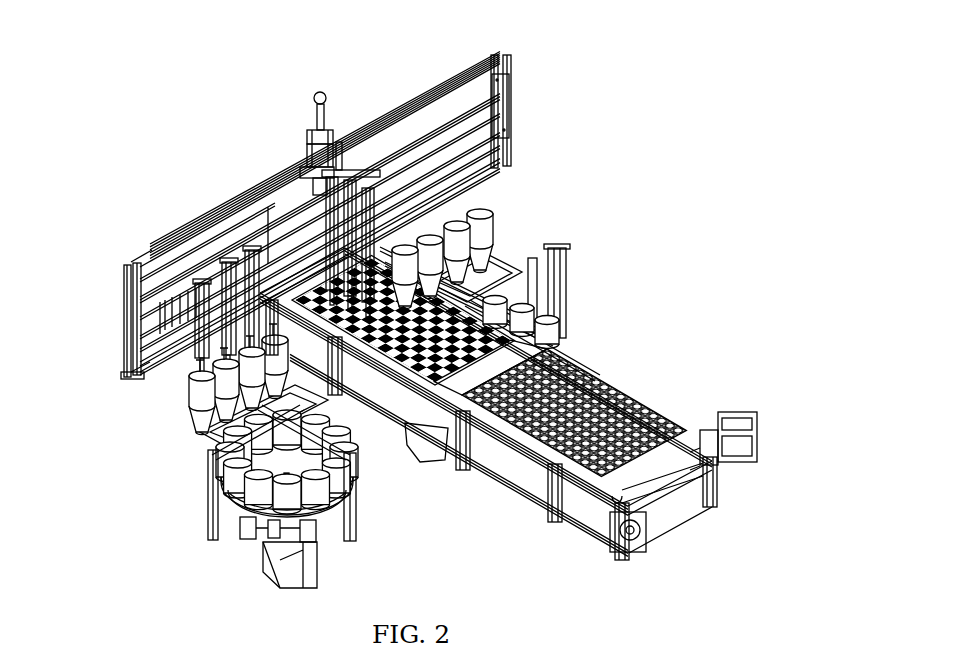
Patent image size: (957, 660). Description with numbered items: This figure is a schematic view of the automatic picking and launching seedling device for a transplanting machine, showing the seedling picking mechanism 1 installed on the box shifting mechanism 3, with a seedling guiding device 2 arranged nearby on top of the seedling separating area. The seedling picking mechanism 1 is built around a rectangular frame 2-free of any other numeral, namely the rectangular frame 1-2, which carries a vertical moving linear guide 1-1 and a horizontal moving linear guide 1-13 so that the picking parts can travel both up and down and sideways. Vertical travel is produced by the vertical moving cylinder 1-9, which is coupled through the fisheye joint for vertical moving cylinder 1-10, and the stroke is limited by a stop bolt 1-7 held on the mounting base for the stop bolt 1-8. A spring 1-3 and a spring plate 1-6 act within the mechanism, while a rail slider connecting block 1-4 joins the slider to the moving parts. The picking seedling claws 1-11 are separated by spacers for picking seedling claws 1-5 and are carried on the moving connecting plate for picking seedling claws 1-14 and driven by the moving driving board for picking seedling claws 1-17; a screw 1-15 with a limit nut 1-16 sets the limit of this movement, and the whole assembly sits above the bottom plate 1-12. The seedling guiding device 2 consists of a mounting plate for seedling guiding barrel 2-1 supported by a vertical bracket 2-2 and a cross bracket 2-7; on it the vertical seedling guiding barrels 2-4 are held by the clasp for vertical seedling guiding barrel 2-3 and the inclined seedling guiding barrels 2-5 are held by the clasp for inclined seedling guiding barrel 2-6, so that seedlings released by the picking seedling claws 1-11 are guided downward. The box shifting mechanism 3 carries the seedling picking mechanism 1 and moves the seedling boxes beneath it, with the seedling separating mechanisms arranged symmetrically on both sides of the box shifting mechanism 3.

The seedling picking mechanism 1 is at (337, 258).
The vertical moving linear guide 1-1 is at (128, 262).
The rectangular frame 1-2 is at (180, 256).
The spring 1-3 is at (248, 256).
The rail slider connecting block 1-4 is at (243, 262).
The spacers for picking seedling claws 1-5 is at (240, 250).
The spring plate 1-6 is at (312, 168).
The stop bolt 1-7 is at (307, 127).
The mounting base for the stop bolt 1-8 is at (310, 132).
The vertical moving cylinder 1-9 is at (326, 118).
The fisheye joint for vertical moving cylinder 1-10 is at (338, 128).
The picking seedling claws 1-11 is at (395, 152).
The bottom plate 1-12 is at (498, 108).
The horizontal moving linear guide 1-13 is at (510, 140).
The moving connecting plate for picking seedling claws 1-14 is at (203, 358).
The screw 1-15 is at (196, 345).
The limit nut 1-16 is at (188, 340).
The moving driving board for picking seedling claws 1-17 is at (134, 374).
The seedling guiding device 2 is at (409, 354).
The mounting plate for seedling guiding barrel 2-1 is at (265, 555).
The vertical bracket 2-2 is at (222, 522).
The clasp for vertical seedling guiding barrel 2-3 is at (210, 478).
The vertical seedling guiding barrels 2-4 is at (472, 218).
The inclined seedling guiding barrels 2-5 is at (483, 228).
The clasp for inclined seedling guiding barrel 2-6 is at (507, 247).
The cross bracket 2-7 is at (562, 262).
The box shifting mechanism 3 is at (625, 400).